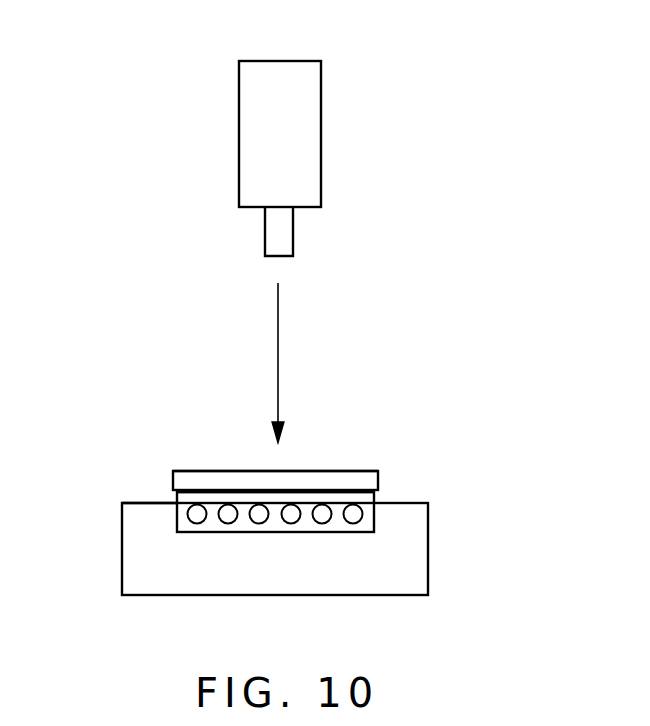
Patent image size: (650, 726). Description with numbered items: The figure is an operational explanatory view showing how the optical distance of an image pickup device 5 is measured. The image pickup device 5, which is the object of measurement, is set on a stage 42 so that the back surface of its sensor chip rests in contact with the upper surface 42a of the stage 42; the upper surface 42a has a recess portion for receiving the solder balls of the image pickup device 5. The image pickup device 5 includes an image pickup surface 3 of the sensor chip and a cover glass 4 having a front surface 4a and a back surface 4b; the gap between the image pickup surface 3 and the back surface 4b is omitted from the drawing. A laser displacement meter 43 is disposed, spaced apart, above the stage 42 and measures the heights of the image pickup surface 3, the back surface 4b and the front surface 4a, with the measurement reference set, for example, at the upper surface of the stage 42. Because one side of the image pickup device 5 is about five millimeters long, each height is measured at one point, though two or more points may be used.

The laser displacement meter 43 is at (337, 135).
The image pickup device 5 is at (137, 445).
The image pickup surface 3 is at (215, 488).
The cover glass 4 is at (375, 480).
The front surface of the cover glass 4a is at (305, 470).
The back surface of the cover glass 4b is at (272, 492).
The stage 42 is at (418, 553).
The upper surface of the stage 42a is at (147, 503).